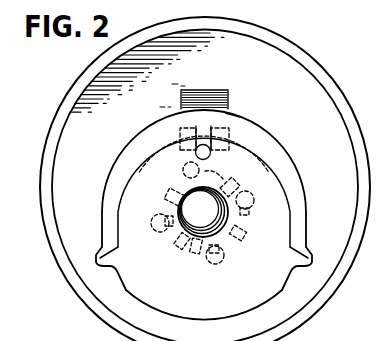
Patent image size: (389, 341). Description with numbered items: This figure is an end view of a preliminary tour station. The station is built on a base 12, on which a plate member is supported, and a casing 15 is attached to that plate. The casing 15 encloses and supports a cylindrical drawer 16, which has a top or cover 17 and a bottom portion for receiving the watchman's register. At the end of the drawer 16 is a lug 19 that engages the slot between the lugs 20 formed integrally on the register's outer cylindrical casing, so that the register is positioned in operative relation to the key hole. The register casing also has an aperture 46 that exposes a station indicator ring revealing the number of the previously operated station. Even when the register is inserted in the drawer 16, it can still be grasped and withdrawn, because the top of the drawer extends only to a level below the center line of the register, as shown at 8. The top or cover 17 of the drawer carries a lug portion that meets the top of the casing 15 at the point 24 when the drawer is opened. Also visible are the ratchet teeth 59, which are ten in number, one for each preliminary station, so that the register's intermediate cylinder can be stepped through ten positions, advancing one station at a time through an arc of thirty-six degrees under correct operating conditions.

The base 12 is at (294, 40).
The casing 15 is at (330, 108).
The top or cover 17 is at (265, 139).
The top of the drawer extending below the register center line 8 is at (311, 262).
The point where lug portion meets casing top 24 is at (207, 104).
The lug 19 is at (233, 115).
The lugs 20 is at (203, 149).
The aperture 46 is at (185, 165).
The cylindrical drawer 16 is at (213, 303).
The ratchet teeth 59 is at (242, 236).